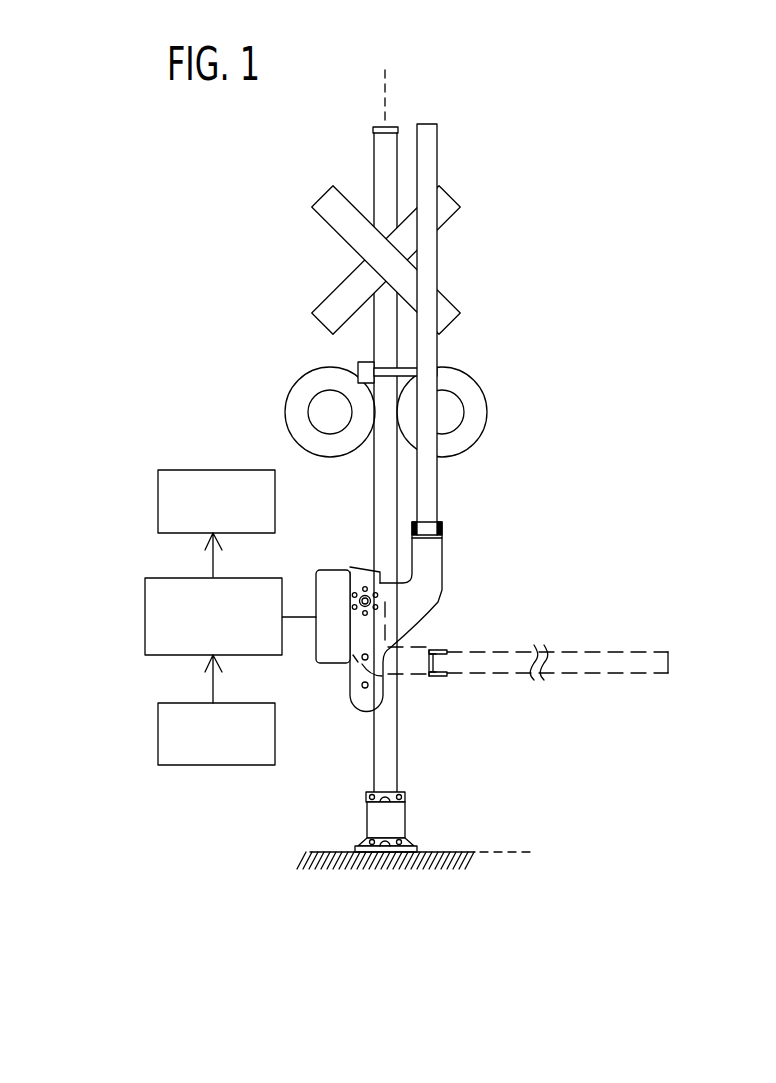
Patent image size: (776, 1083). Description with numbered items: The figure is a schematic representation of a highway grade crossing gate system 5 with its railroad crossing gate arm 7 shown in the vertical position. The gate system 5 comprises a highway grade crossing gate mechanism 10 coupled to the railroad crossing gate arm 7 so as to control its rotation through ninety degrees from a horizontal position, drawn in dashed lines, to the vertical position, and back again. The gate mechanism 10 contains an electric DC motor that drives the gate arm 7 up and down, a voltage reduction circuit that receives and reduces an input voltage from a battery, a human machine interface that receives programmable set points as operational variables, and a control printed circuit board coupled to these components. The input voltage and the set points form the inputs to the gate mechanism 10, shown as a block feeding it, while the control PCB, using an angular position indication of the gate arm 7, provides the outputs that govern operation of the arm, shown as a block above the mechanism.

The highway grade crossing gate system 5 is at (230, 360).
The railroad crossing gate arm 7 is at (438, 490).
The highway grade crossing gate mechanism 10 is at (168, 578).